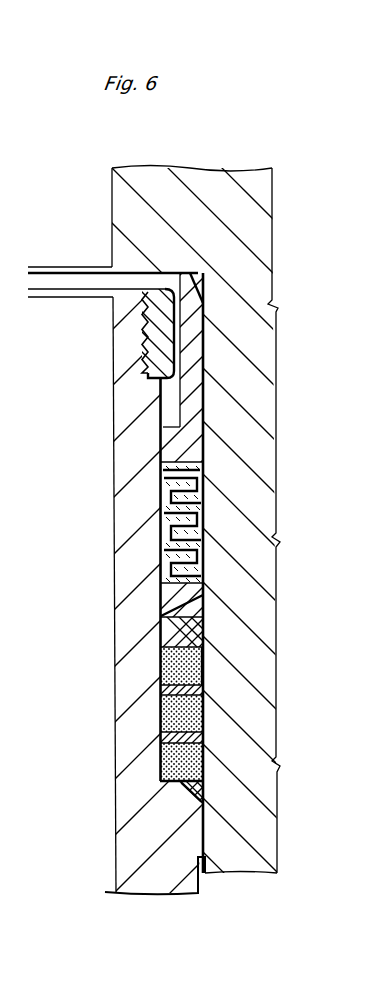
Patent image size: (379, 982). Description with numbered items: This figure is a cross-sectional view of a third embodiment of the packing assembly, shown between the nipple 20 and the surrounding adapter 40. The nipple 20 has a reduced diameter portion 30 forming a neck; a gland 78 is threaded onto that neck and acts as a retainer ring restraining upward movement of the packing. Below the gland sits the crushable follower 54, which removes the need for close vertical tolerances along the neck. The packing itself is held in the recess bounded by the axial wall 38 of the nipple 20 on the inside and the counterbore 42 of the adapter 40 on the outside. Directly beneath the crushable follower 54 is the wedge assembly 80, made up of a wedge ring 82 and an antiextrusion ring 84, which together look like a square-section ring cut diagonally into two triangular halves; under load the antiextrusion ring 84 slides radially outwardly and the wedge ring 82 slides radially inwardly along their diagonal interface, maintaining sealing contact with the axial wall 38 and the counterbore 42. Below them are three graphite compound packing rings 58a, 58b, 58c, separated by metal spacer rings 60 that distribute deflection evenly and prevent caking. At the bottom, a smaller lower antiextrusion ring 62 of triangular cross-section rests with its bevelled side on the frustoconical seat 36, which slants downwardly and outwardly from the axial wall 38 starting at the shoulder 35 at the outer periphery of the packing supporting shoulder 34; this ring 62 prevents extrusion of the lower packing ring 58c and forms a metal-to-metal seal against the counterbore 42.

The nipple 20 is at (133, 873).
The reduced diameter portion 30 is at (127, 397).
The packing supporting shoulder 34 is at (176, 781).
The shoulder 35 is at (180, 782).
The frustoconical seat 36 is at (200, 798).
The axial wall 38 is at (160, 656).
The adapter 40 is at (277, 233).
The counterbore 42 is at (205, 690).
The crushable follower 54 is at (162, 511).
The packing ring 58a is at (205, 657).
The packing ring 58b is at (205, 723).
The packing ring 58c is at (205, 760).
The metal spacer rings 60 is at (195, 710).
The lower antiextrusion ring 62 is at (205, 790).
The gland 78 is at (162, 314).
The wedge assembly 80 is at (205, 590).
The wedge ring 82 is at (161, 604).
The antiextrusion ring 84 is at (205, 628).